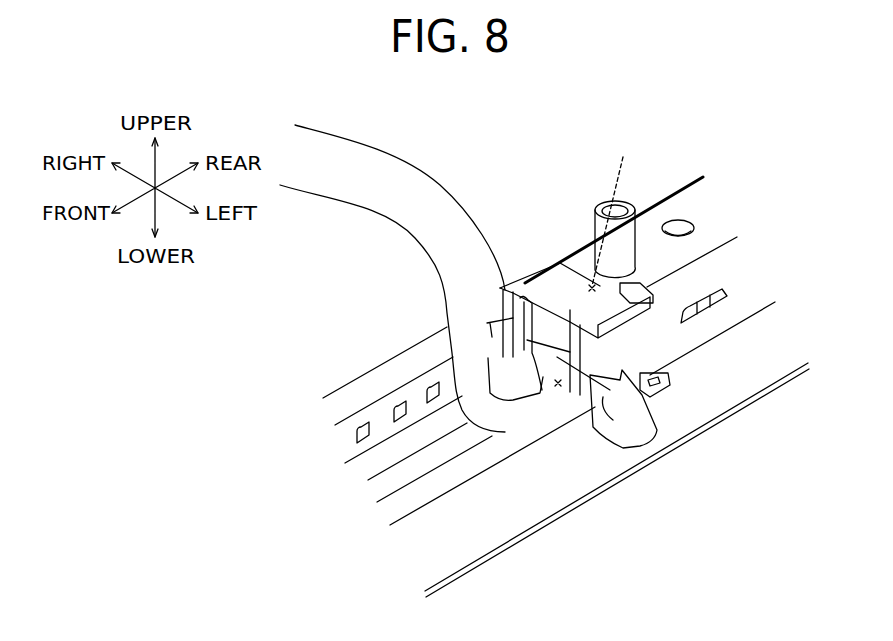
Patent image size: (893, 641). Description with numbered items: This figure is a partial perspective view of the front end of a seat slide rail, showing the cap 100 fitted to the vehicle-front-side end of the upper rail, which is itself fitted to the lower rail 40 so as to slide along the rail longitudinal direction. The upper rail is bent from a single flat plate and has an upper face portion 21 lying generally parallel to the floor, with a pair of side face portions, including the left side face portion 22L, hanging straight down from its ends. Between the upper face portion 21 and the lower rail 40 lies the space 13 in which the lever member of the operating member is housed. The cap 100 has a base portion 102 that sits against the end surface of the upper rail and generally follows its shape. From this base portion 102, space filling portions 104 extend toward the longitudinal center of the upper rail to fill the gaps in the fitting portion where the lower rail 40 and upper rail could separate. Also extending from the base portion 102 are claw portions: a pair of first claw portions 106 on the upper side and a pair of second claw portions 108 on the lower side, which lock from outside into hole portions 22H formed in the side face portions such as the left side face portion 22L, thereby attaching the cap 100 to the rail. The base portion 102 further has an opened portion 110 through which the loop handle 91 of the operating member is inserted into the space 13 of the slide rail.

The loop handle 91 is at (363, 170).
The space 13 is at (612, 211).
The upper face portion 21 is at (685, 210).
The hole portions 22H is at (573, 263).
The left side face portion 22L is at (673, 312).
The lower rail 40 is at (463, 540).
The cap 100 is at (612, 460).
The base portion 102 is at (535, 283).
The space filling portions 104 is at (660, 415).
The first claw portions 106 is at (590, 240).
The second claw portions 108 is at (670, 378).
The opened portion 110 is at (558, 388).